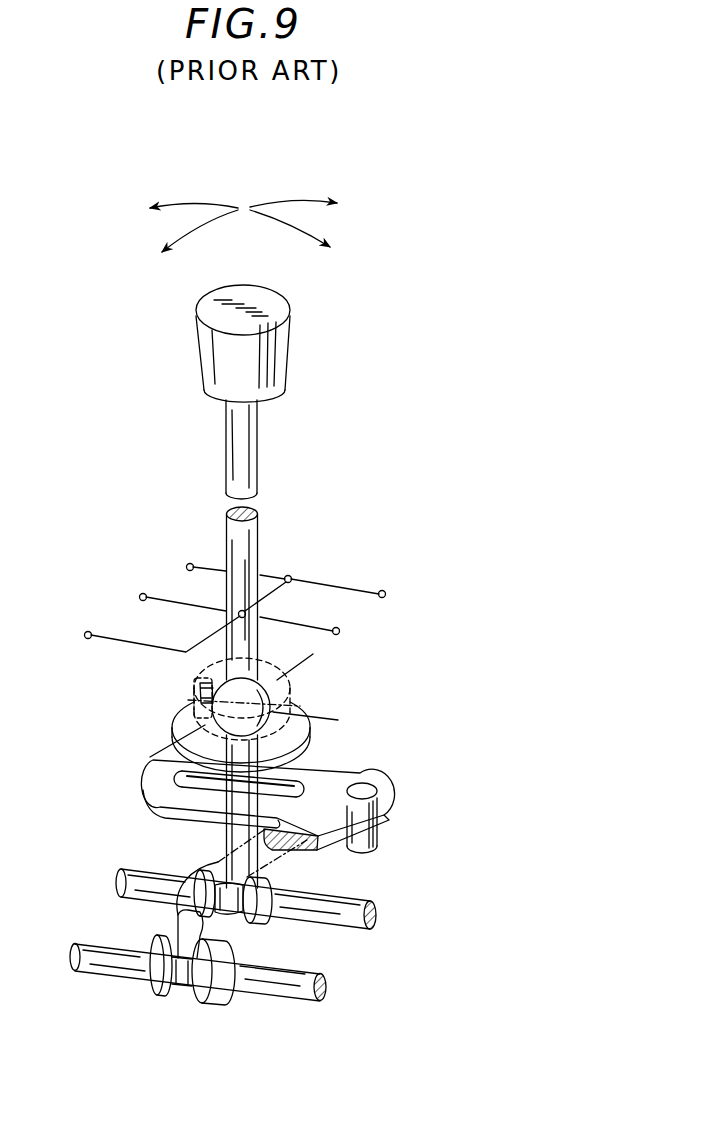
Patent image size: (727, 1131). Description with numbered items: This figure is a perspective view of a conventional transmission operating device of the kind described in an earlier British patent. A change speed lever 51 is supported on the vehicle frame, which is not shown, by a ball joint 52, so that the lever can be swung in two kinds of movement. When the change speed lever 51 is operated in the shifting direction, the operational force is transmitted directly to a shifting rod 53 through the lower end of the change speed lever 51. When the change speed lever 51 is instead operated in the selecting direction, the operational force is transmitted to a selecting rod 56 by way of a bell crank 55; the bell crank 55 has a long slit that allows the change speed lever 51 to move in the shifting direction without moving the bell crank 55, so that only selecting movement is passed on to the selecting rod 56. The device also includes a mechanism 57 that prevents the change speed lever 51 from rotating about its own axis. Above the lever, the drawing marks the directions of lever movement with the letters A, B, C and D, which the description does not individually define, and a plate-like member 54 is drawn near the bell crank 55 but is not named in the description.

The change speed lever 51 is at (250, 453).
The ball joint 52 is at (302, 693).
The shifting rod 53 is at (340, 913).
The guide plate 54 is at (298, 782).
The bell crank 55 is at (337, 807).
The selecting rod 56 is at (300, 1000).
The mechanism for preventing rotation 57 is at (176, 691).
The direction A is at (199, 229).
The direction B is at (300, 204).
The direction C is at (201, 205).
The direction D is at (300, 232).